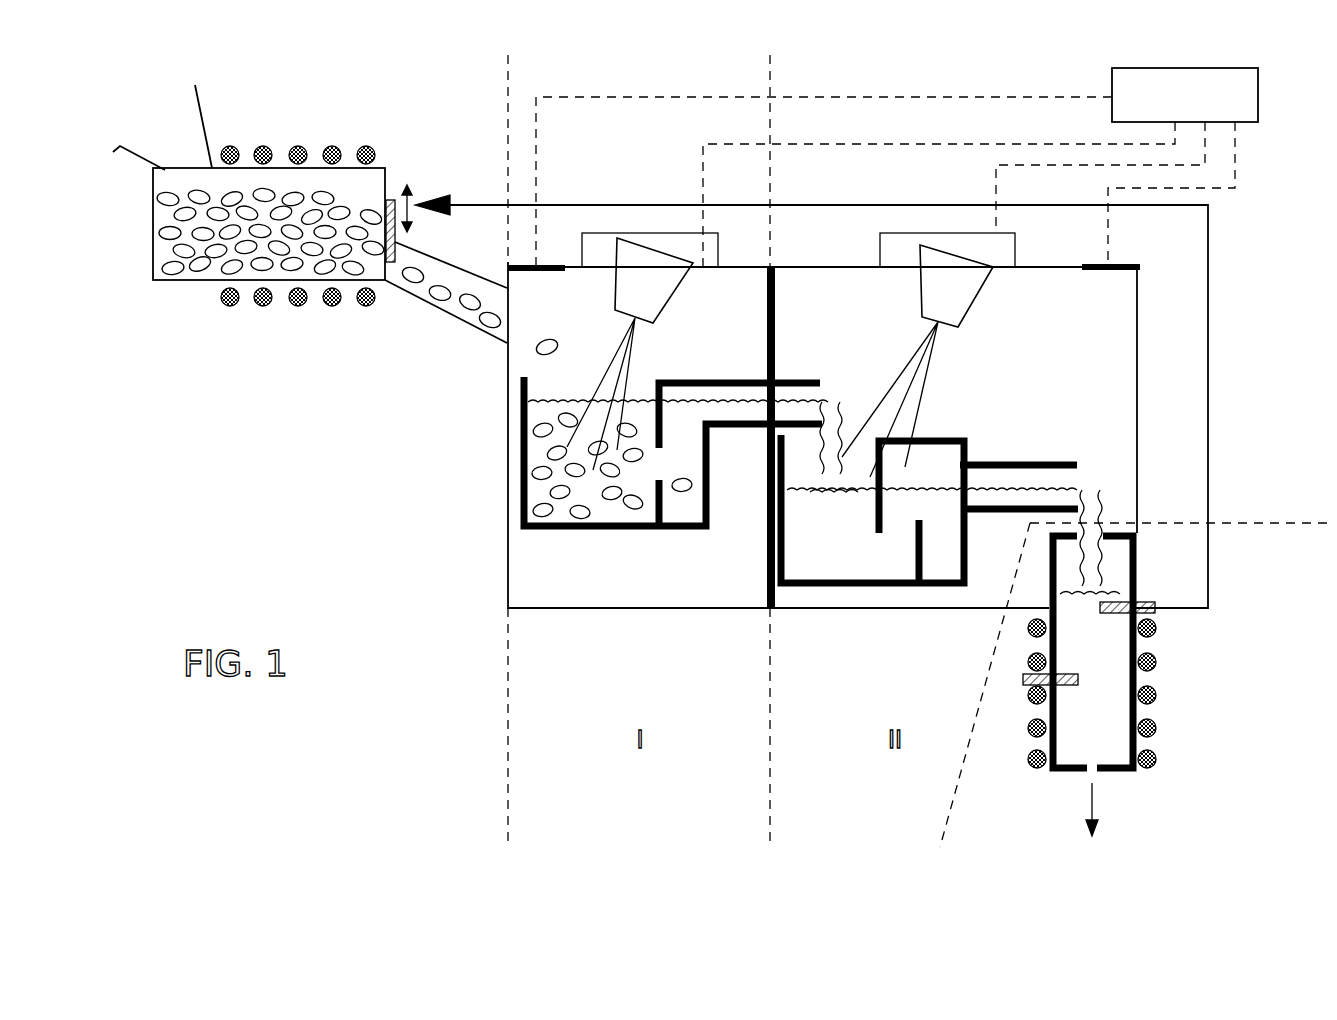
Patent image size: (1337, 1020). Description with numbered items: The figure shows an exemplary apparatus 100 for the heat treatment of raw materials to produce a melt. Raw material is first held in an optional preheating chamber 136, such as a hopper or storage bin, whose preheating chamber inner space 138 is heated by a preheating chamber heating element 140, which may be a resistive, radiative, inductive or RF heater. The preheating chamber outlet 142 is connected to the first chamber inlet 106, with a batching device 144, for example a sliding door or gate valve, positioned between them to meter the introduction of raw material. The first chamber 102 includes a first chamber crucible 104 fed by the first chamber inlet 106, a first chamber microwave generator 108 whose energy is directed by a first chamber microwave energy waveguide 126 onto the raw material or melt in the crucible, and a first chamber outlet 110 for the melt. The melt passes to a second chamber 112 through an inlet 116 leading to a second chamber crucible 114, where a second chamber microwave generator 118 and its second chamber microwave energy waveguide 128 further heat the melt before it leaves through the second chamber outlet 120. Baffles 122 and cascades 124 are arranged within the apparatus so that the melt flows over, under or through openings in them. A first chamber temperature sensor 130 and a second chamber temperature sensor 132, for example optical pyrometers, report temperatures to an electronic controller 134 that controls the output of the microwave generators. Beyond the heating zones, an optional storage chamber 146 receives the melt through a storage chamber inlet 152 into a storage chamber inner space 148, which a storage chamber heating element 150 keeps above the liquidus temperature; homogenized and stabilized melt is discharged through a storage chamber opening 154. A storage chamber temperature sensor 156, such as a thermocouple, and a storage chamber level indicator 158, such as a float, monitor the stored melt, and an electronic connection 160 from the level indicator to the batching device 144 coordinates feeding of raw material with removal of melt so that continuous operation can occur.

The apparatus 100 is at (298, 434).
The first chamber 102 is at (609, 583).
The first chamber crucible 104 is at (520, 487).
The first chamber inlet 106 is at (520, 325).
The first chamber microwave generator 108 is at (582, 255).
The first chamber outlet 110 is at (753, 388).
The second chamber 112 is at (994, 359).
The second chamber crucible 114 is at (885, 517).
The inlet 116 is at (822, 393).
The second chamber microwave generator 118 is at (880, 252).
The second chamber outlet 120 is at (1086, 477).
The baffles 122 is at (665, 437).
The cascades 124 is at (1116, 489).
The first chamber microwave energy waveguide 126 is at (629, 293).
The second chamber microwave energy waveguide 128 is at (932, 293).
The first chamber temperature sensor 130 is at (520, 260).
The second chamber temperature sensor 132 is at (1100, 262).
The electronic controller 134 is at (1169, 109).
The preheating chamber 136 is at (185, 302).
The preheating chamber inner space 138 is at (332, 201).
The preheating chamber heating element 140 is at (298, 144).
The preheating chamber outlet 142 is at (390, 273).
The batching device 144 is at (392, 200).
The storage chamber 146 is at (1198, 707).
The storage chamber inner space 148 is at (1075, 656).
The storage chamber heating element 150 is at (1157, 662).
The storage chamber inlet 152 is at (1112, 563).
The storage chamber opening 154 is at (1087, 780).
The storage chamber temperature sensor 156 is at (1023, 678).
The storage chamber level indicator 158 is at (1157, 607).
The electronic connection 160 is at (1212, 460).